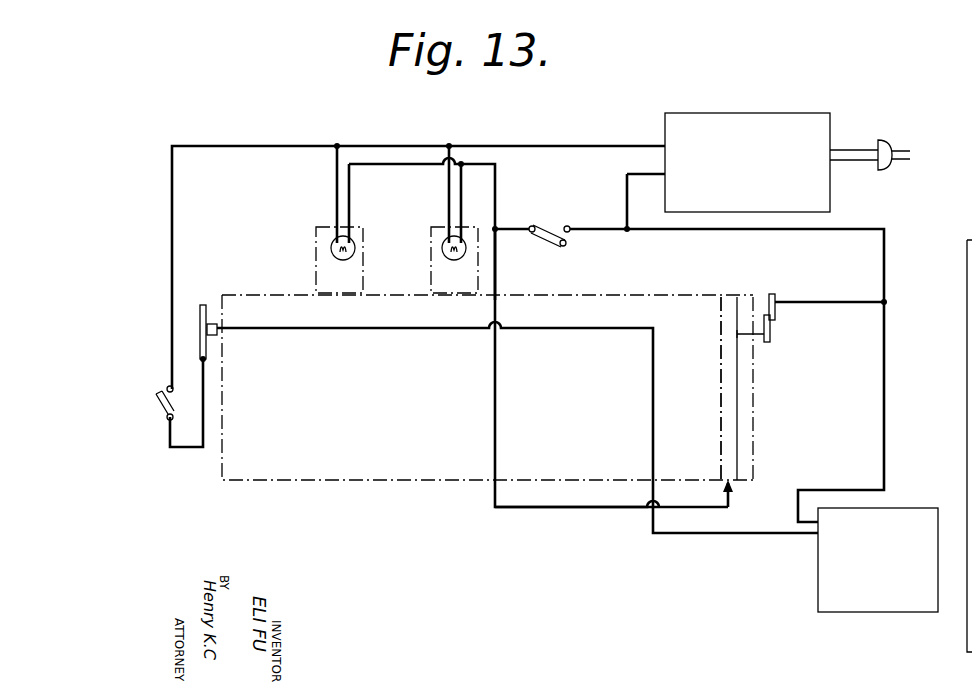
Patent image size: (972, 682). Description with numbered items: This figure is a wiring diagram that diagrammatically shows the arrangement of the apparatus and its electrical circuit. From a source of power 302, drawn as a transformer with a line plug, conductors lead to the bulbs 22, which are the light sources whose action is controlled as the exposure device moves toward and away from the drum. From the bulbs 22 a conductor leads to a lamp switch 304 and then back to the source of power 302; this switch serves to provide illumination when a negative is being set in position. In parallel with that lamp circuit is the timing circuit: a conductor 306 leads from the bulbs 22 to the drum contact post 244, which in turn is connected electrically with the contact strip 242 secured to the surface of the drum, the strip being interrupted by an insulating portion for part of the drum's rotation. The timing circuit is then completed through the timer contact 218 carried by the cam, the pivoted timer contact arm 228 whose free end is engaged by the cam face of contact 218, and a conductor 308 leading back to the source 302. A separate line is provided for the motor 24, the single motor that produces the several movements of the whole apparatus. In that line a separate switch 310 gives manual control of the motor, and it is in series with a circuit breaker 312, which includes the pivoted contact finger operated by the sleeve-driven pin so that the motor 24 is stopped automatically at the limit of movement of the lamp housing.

The source of power 302 is at (768, 122).
The lamp switch 304 is at (549, 223).
The conductor 306 is at (496, 268).
The conductor 308 is at (870, 229).
The light sources 22 is at (440, 244).
The circuit breaker 312 is at (212, 338).
The switch 310 is at (160, 412).
The timer contact arm 228 is at (775, 306).
The timer contact 218 is at (770, 332).
The contact strip 242 is at (728, 430).
The drum contact post 244 is at (733, 490).
The motor 24 is at (884, 618).